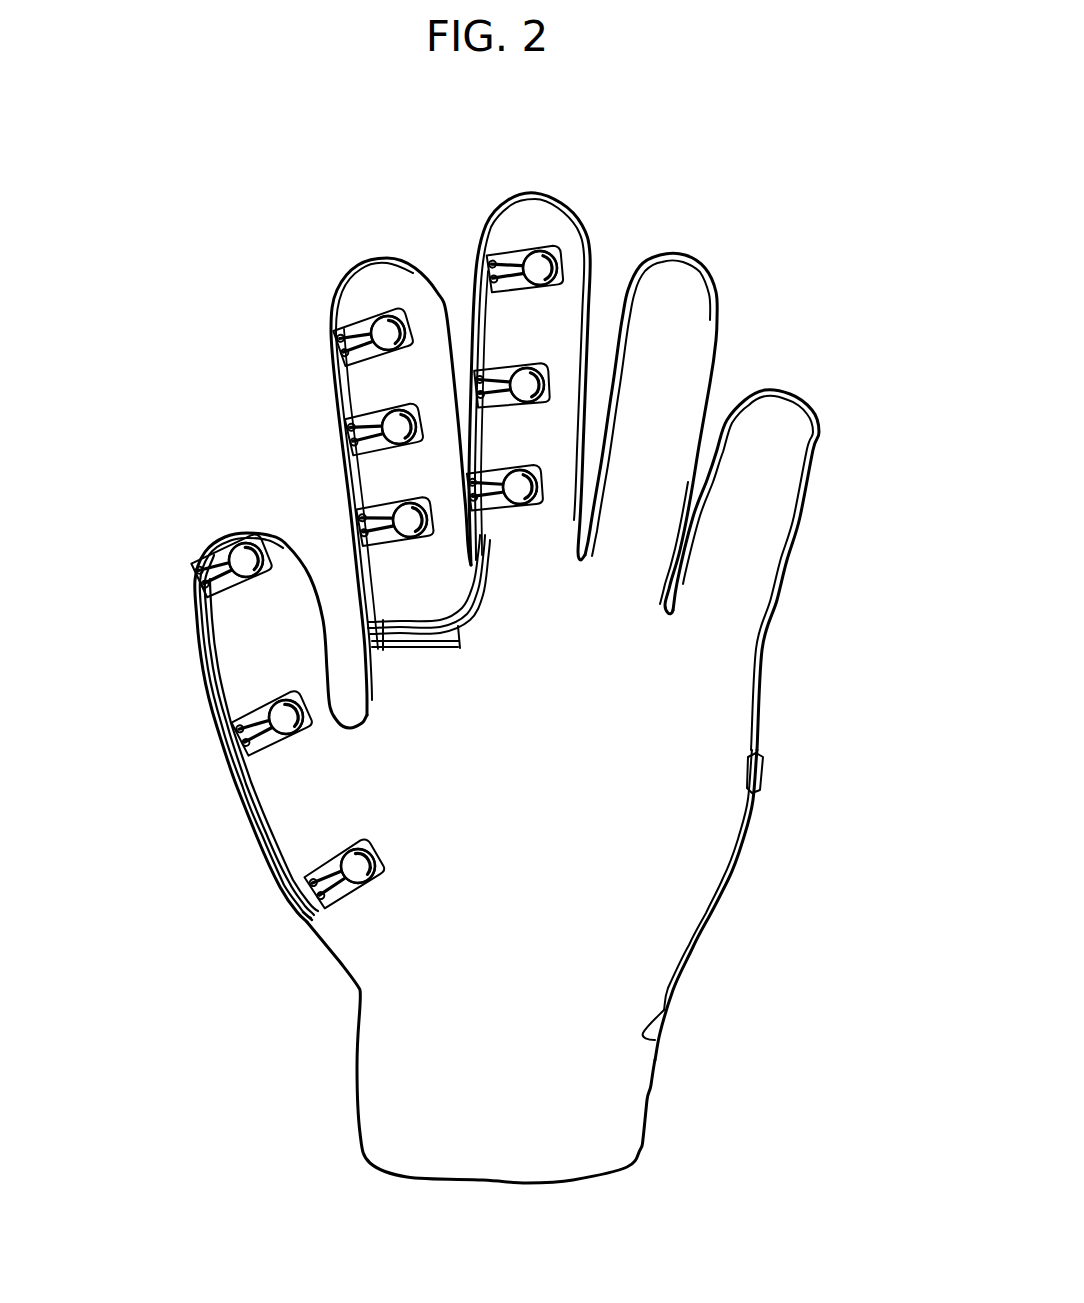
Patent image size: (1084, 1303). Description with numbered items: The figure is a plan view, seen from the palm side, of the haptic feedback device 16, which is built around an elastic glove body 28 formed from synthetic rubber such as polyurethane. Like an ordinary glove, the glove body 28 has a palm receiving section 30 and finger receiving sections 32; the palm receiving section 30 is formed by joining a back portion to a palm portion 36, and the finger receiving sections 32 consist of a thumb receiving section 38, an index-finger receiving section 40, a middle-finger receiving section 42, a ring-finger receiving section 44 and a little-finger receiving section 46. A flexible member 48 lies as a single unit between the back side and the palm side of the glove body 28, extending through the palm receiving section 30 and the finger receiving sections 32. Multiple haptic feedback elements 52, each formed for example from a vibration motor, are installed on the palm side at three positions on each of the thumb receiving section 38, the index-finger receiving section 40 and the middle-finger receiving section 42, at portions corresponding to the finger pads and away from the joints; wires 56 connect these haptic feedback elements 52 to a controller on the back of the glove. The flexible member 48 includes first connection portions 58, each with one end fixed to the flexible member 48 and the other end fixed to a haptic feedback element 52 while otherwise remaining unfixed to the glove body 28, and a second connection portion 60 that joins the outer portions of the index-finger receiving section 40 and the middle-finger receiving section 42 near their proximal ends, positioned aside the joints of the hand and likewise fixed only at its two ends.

The haptic feedback device 16 is at (787, 248).
The glove body 28 is at (304, 926).
The palm receiving section 30 is at (589, 900).
The finger receiving sections 32 is at (699, 243).
The palm portion 36 is at (696, 697).
The thumb receiving section 38 is at (228, 727).
The index-finger receiving section 40 is at (365, 380).
The middle-finger receiving section 42 is at (550, 218).
The ring-finger receiving section 44 is at (685, 337).
The little-finger receiving section 46 is at (797, 415).
The flexible member 48 is at (207, 693).
The haptic feedback elements 52 is at (550, 258).
The wires 56 is at (237, 795).
The first connection portions 58 is at (515, 258).
The second connection portion 60 is at (452, 632).